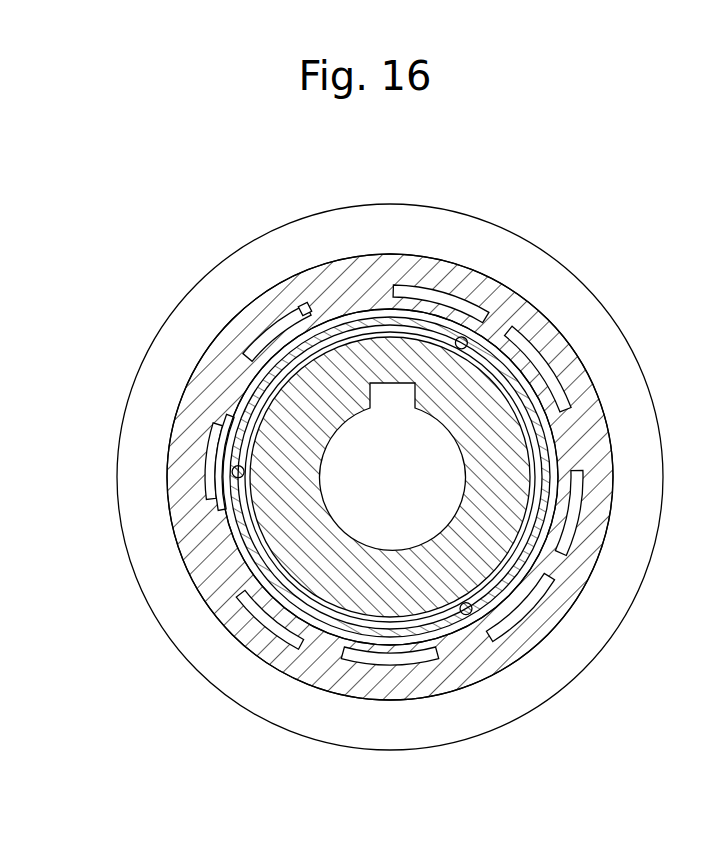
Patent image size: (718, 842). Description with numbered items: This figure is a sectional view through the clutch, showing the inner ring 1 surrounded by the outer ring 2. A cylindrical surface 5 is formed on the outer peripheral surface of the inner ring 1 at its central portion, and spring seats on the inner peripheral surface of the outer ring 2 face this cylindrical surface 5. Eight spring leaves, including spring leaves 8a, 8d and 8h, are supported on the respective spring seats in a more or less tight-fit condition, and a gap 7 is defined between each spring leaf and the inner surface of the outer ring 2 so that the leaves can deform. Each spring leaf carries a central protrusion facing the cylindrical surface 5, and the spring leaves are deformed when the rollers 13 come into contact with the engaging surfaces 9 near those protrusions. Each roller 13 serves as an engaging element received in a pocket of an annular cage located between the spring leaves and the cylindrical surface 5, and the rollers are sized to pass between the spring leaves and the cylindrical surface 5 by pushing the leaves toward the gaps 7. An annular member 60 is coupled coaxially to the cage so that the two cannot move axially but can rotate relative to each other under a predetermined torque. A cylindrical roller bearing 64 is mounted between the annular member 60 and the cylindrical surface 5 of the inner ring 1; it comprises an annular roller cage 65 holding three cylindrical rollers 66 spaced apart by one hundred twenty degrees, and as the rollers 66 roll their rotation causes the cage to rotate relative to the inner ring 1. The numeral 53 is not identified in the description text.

The inner ring 1 is at (352, 300).
The outer ring 2 is at (435, 257).
The cylindrical surface 5 is at (258, 412).
The gap 7 is at (262, 350).
The spring leaf 8a is at (273, 313).
The spring leaf 8d is at (565, 557).
The spring leaf 8h is at (535, 592).
The engaging surface 9 is at (305, 308).
The roller 13 is at (223, 443).
The hub 53 is at (353, 540).
The annular member 60 is at (600, 407).
The cylindrical roller bearing 64 is at (507, 333).
The roller cage 65 is at (452, 310).
The cylindrical roller 66 is at (465, 336).